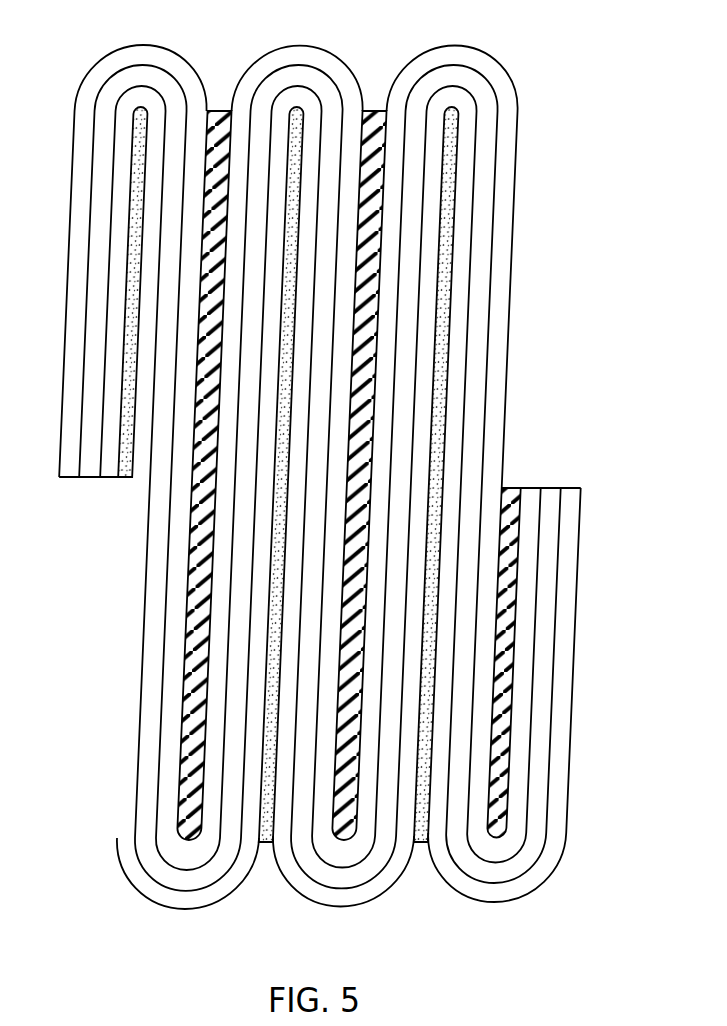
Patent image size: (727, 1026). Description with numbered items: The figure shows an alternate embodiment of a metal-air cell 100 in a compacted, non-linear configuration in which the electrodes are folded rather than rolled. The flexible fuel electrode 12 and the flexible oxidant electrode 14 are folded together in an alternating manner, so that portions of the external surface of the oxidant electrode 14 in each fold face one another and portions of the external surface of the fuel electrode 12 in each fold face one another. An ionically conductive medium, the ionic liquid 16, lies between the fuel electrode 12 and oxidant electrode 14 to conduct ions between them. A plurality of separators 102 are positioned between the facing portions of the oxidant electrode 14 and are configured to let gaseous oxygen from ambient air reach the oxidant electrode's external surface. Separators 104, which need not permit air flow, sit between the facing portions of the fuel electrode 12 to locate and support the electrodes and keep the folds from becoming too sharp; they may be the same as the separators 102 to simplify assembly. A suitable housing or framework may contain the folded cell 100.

The cell 100 is at (623, 78).
The fuel electrode 12 is at (148, 58).
The oxidant electrode 14 is at (217, 885).
The ionic liquid 16 is at (288, 80).
The separators 102 is at (132, 287).
The separators 104 is at (207, 180).